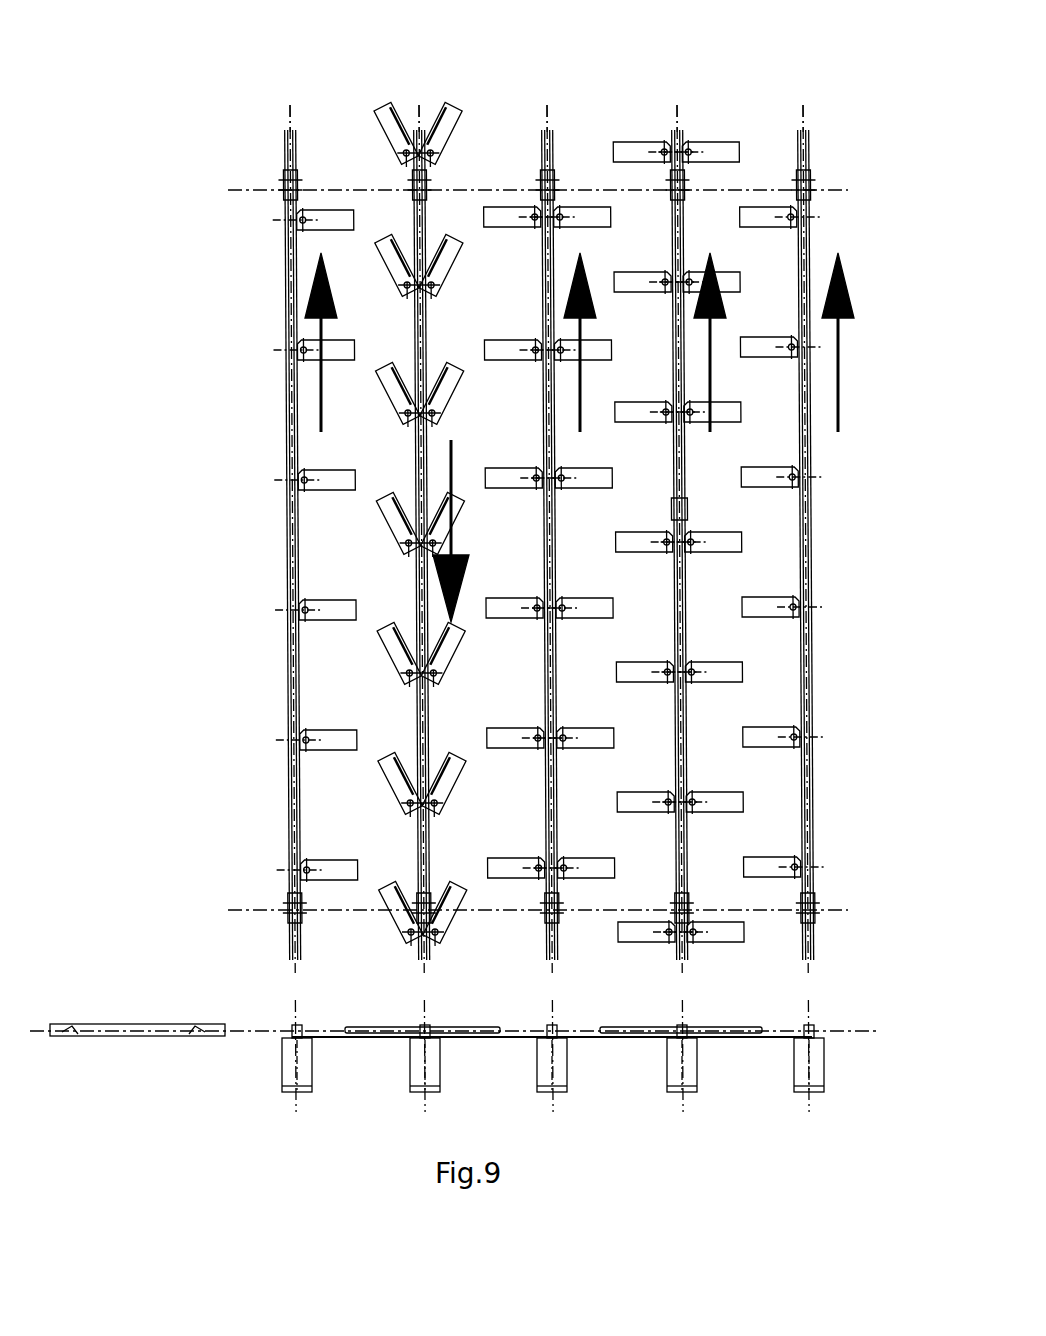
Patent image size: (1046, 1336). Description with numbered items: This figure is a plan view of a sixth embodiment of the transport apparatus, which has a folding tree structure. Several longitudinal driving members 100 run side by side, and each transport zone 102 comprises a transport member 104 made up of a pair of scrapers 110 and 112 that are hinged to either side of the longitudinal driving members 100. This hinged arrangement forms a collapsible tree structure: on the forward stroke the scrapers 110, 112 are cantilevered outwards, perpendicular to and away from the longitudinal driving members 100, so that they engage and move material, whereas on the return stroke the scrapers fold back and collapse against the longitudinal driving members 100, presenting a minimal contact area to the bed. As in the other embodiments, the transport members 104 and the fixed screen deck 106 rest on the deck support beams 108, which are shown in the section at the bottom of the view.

The longitudinal driving member 100 is at (418, 733).
The transport zone 102 is at (663, 112).
The transport member 104 is at (650, 142).
The fixed screen deck 106 is at (475, 1040).
The deck support beam 108 is at (568, 1074).
The scraper 110 is at (388, 360).
The scraper 112 is at (788, 354).